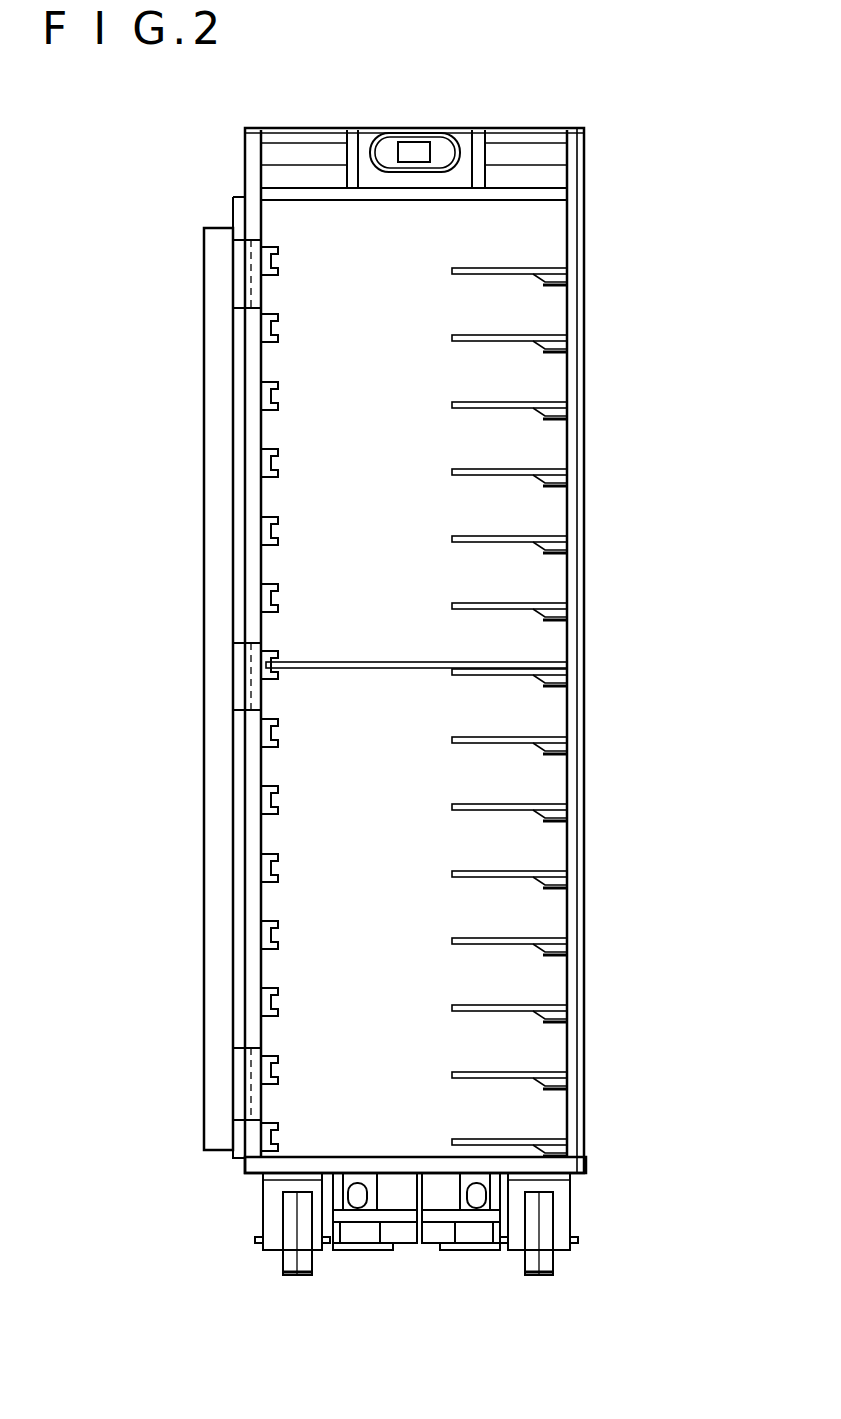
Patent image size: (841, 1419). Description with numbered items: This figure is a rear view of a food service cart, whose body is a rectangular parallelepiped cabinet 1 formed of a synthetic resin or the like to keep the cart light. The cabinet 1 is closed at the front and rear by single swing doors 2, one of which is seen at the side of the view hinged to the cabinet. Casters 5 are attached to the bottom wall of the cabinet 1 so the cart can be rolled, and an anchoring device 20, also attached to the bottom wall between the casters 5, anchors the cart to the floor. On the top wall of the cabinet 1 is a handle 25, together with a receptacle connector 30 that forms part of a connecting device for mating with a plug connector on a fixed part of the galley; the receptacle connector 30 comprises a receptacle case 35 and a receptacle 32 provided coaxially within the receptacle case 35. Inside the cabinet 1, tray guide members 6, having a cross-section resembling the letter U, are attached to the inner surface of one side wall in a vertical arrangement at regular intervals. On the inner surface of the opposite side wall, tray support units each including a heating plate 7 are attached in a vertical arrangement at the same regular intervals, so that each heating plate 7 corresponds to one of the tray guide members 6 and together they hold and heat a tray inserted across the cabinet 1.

The cabinet 1 is at (610, 560).
The single swing door 2 is at (207, 587).
The casters 5 is at (287, 1261).
The tray guide members 6 is at (268, 323).
The heating plate 7 is at (456, 403).
The anchoring device 20 is at (416, 1234).
The handle 25 is at (302, 150).
The receptacle connector 30 is at (404, 110).
The receptacle 32 is at (427, 131).
The receptacle case 35 is at (469, 131).